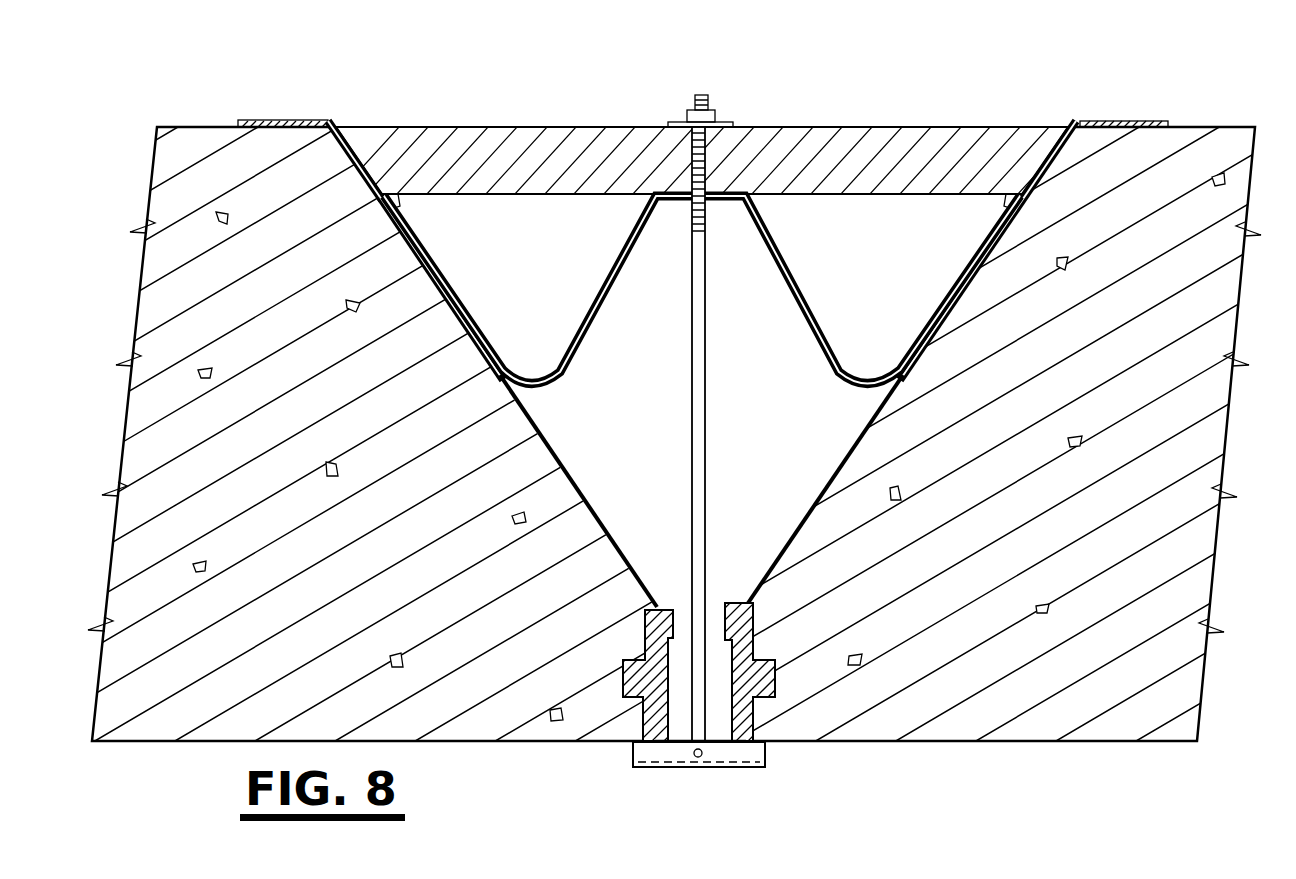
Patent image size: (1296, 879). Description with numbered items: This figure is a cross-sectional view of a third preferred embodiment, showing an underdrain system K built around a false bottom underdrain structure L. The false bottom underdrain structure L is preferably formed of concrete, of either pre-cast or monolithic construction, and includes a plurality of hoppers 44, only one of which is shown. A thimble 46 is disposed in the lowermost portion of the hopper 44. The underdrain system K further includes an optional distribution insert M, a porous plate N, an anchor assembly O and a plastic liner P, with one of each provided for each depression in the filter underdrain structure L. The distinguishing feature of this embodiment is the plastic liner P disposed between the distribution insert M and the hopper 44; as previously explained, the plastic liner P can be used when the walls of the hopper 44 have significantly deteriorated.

The false bottom underdrain structure L is at (205, 123).
The underdrain system K is at (413, 102).
The anchor assembly O is at (697, 93).
The porous plate N is at (920, 127).
The plastic liner P is at (1117, 120).
The distribution insert M is at (790, 272).
The hopper 44 is at (585, 522).
The thimble 46 is at (642, 720).